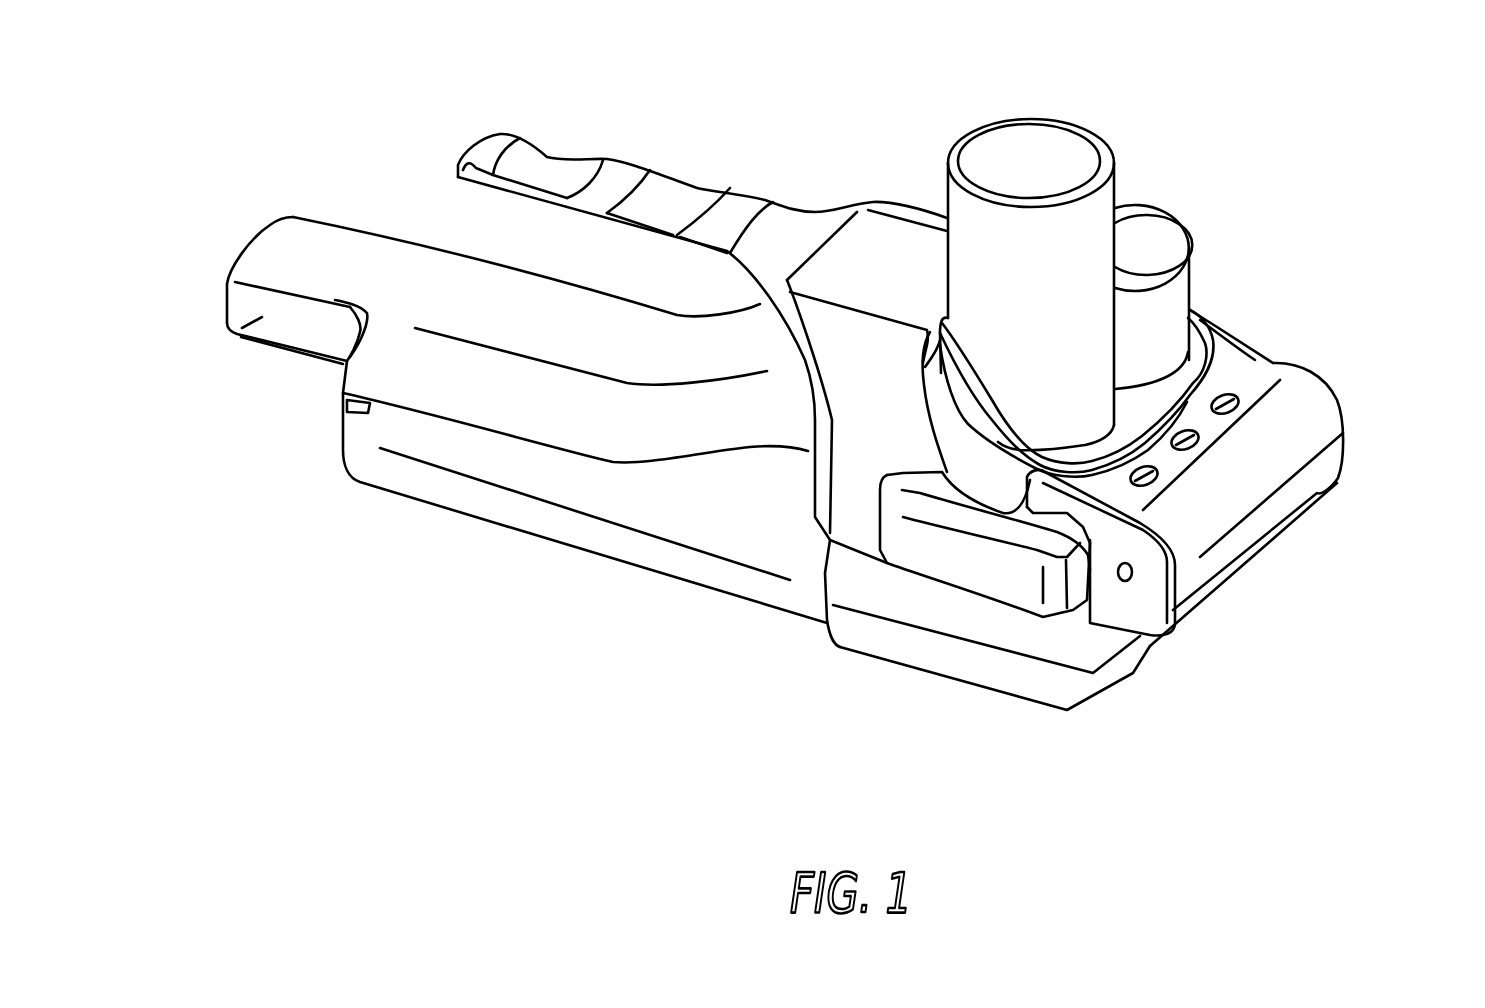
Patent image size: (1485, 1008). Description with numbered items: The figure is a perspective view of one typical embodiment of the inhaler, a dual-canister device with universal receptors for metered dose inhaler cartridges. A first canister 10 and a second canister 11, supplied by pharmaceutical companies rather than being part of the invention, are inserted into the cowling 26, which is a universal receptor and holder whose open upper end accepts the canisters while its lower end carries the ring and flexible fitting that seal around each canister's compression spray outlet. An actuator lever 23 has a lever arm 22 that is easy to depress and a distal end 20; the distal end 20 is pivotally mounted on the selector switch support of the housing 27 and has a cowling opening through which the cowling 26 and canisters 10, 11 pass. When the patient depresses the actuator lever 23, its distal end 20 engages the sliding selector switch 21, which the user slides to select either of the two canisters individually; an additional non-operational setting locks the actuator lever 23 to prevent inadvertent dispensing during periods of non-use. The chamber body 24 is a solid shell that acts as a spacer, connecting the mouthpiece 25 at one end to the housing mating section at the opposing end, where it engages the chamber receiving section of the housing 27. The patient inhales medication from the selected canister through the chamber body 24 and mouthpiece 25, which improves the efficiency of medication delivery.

The first canister 10 is at (1117, 177).
The second canister 11 is at (1195, 244).
The distal end 20 is at (1297, 441).
The sliding selector switch 21 is at (930, 560).
The lever arm 22 is at (540, 160).
The actuator lever 23 is at (838, 240).
The chamber body 24 is at (613, 483).
The mouthpiece 25 is at (237, 336).
The cowling 26 is at (1185, 385).
The housing 27 is at (1030, 687).